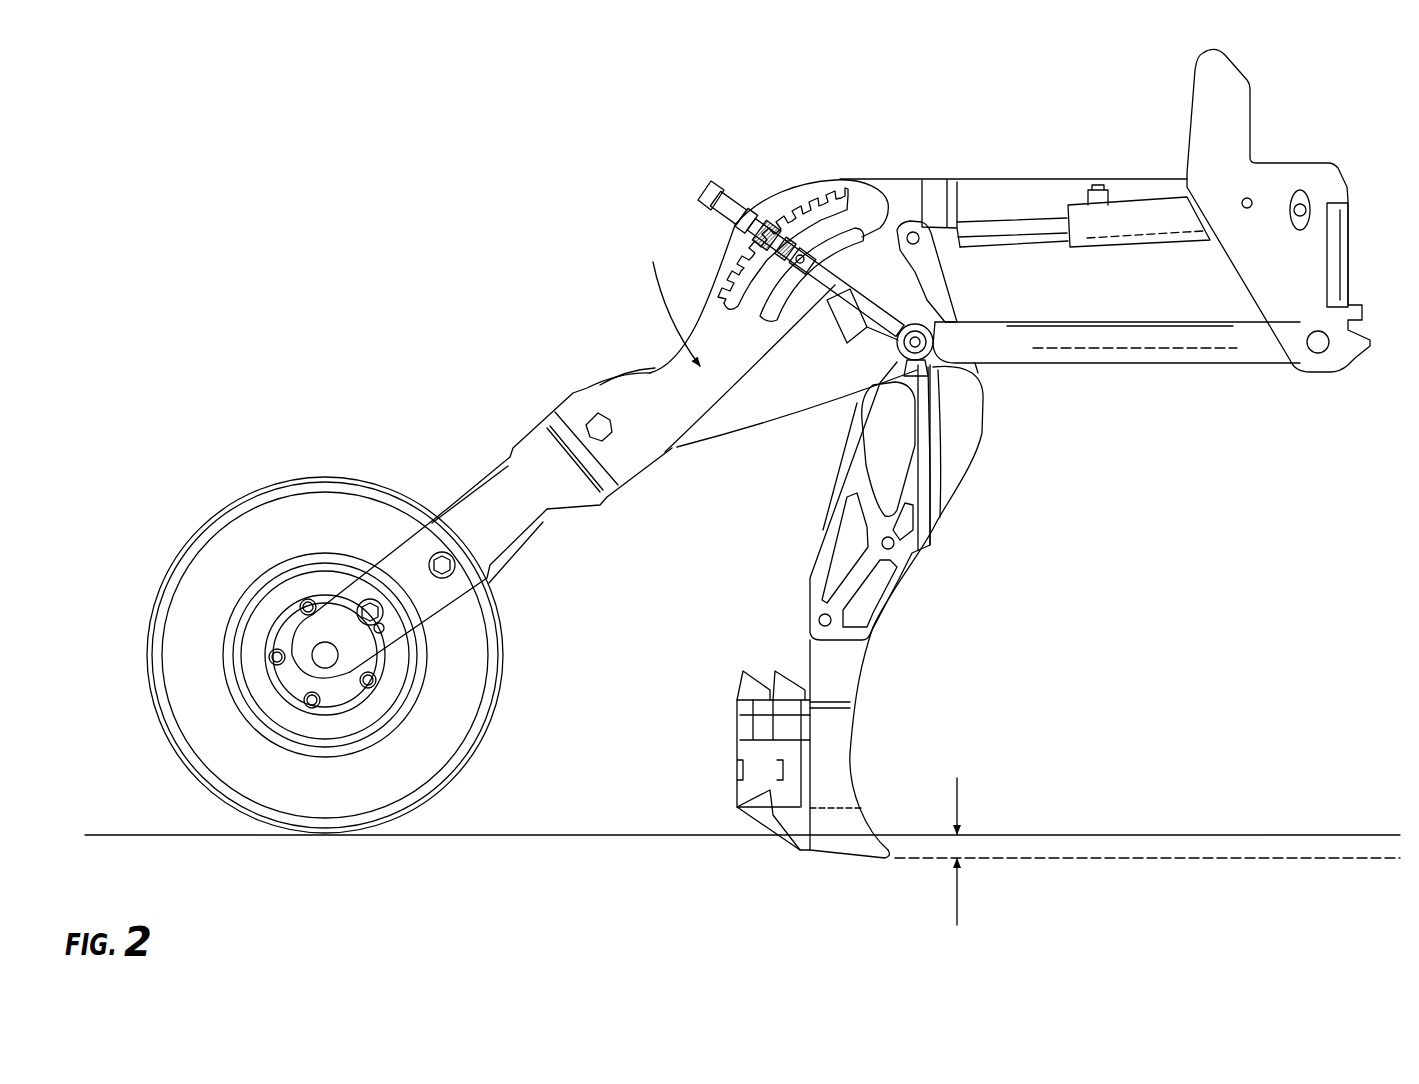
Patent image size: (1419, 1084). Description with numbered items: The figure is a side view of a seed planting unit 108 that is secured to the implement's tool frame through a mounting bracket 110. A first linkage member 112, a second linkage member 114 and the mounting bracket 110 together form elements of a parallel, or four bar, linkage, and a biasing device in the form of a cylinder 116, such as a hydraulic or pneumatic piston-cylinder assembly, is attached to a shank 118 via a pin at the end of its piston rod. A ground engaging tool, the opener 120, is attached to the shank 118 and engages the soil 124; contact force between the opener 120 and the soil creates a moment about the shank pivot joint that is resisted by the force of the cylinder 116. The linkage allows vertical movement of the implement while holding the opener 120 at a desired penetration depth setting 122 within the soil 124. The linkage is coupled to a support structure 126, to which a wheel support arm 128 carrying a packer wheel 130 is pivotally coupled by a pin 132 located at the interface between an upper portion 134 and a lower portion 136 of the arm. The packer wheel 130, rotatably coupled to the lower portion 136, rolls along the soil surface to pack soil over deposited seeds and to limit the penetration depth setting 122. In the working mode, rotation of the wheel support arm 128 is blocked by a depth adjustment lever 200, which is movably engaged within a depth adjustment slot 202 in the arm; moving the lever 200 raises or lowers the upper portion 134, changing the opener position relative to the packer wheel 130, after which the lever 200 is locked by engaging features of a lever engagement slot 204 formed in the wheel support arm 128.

The seed planting unit 108 is at (553, 280).
The mounting bracket 110 is at (1235, 122).
The first linkage member 112 is at (1125, 338).
The second linkage member 114 is at (1020, 192).
The cylinder 116 is at (1128, 217).
The shank 118 is at (930, 507).
The opener 120 is at (848, 827).
The penetration depth setting 122 is at (957, 793).
The soil 124 is at (1200, 843).
The support structure 126 is at (816, 471).
The wheel support arm 128 is at (666, 298).
The packer wheel 130 is at (325, 512).
The pin 132 is at (598, 425).
The upper portion 134 is at (680, 375).
The lower portion 136 is at (540, 452).
The depth adjustment lever 200 is at (750, 190).
The depth adjustment slot 202 is at (858, 223).
The lever engagement slot 204 is at (803, 211).